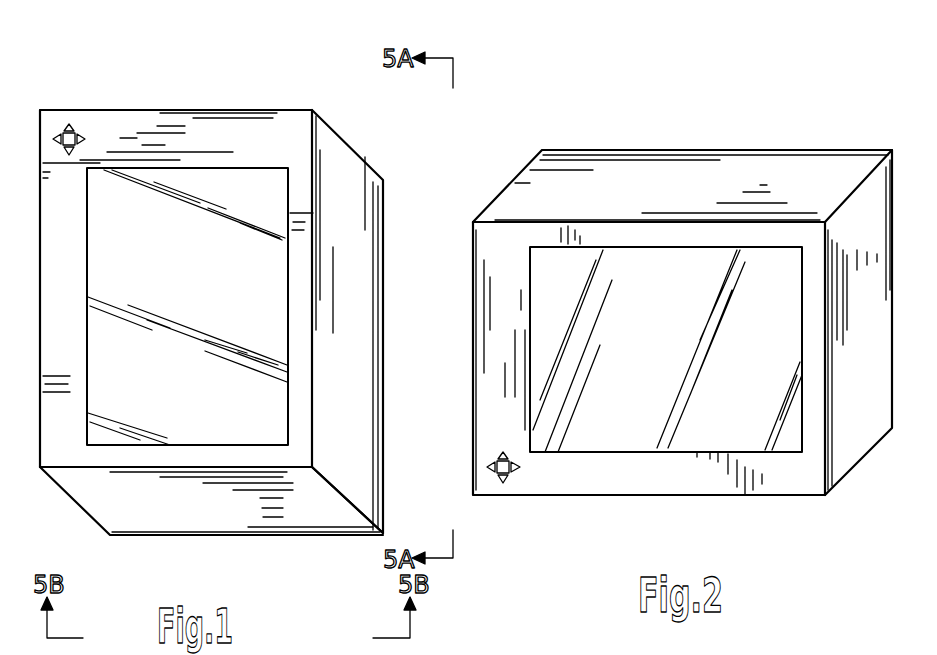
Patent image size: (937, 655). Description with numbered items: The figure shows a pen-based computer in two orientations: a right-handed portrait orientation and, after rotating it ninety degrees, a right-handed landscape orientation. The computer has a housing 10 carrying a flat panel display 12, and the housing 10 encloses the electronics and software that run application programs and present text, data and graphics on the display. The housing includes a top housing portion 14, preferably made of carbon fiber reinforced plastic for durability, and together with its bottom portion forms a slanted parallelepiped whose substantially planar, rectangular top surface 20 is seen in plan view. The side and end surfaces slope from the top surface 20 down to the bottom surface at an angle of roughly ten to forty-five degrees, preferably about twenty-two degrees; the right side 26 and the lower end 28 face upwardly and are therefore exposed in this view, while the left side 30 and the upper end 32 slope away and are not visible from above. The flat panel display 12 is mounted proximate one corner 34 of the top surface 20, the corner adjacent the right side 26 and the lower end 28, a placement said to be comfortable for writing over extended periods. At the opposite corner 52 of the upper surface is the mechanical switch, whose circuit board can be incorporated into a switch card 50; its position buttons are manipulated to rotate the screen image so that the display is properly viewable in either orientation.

In FIG. 1, the housing 10 is at (277, 89).
In FIG. 2, the housing 10 is at (545, 118).
In FIG. 1, the flat panel display 12 is at (224, 311).
In FIG. 2, the flat panel display 12 is at (651, 357).
In FIG. 1, the top housing portion 14 is at (337, 130).
In FIG. 2, the top housing portion 14 is at (682, 322).
In FIG. 1, the top surface 20 is at (255, 130).
In FIG. 2, the top surface 20 is at (706, 224).
In FIG. 1, the right side 26 is at (335, 197).
In FIG. 2, the right side 26 is at (624, 179).
In FIG. 1, the lower end 28 is at (150, 497).
In FIG. 2, the lower end 28 is at (857, 410).
In FIG. 1, the left side 30 is at (60, 258).
In FIG. 1, the upper end 32 is at (147, 140).
In FIG. 1, the corner 34 is at (318, 468).
In FIG. 2, the corner 34 is at (825, 222).
In FIG. 1, the switch card 50 is at (77, 137).
In FIG. 2, the switch card 50 is at (508, 473).
In FIG. 1, the opposite corner 52 is at (40, 108).
In FIG. 2, the opposite corner 52 is at (470, 498).